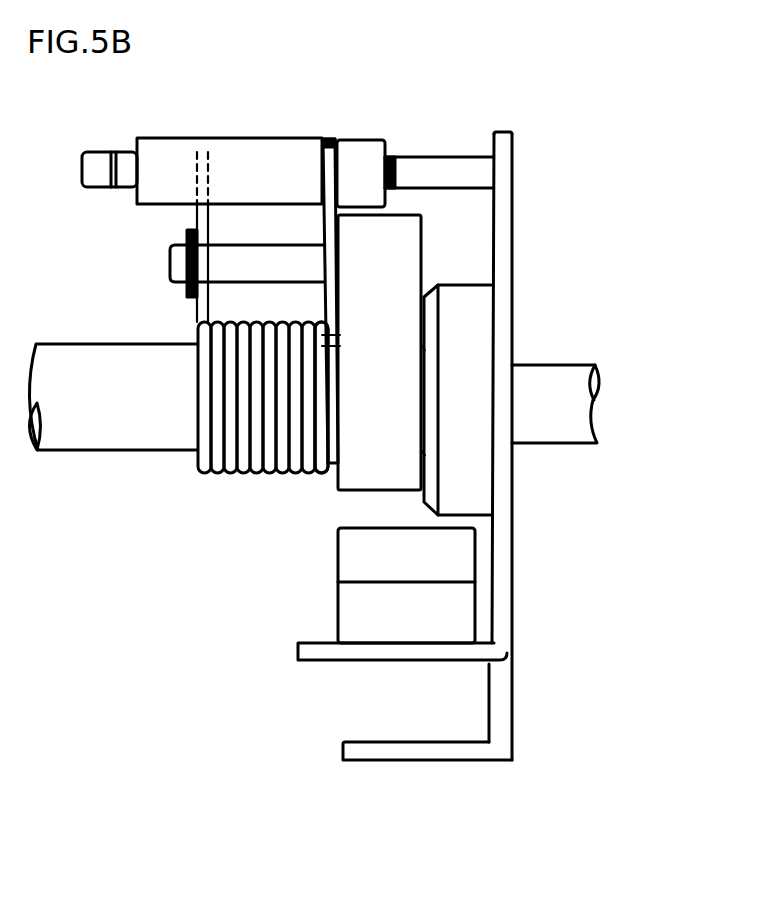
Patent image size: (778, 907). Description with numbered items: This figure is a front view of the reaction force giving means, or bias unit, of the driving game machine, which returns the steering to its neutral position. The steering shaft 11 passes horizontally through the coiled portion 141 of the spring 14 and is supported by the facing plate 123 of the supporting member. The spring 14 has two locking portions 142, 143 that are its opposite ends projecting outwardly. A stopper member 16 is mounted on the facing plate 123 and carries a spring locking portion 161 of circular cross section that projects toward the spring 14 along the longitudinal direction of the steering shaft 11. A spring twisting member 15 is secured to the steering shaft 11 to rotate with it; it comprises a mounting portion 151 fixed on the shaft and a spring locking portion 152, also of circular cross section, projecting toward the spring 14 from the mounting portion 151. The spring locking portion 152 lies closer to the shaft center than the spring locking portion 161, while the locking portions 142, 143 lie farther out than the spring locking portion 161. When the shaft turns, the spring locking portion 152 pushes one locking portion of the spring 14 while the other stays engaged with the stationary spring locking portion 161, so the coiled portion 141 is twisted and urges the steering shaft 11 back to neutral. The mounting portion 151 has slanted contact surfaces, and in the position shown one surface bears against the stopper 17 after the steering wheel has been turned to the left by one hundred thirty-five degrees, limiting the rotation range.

The steering shaft 11 is at (90, 443).
The spring 14 is at (220, 477).
The coiled portion 141 is at (258, 477).
The locking portion 142 is at (198, 217).
The locking portion 143 is at (329, 140).
The spring twisting member 15 is at (436, 270).
The mounting portion 151 is at (417, 232).
The spring locking portion 152 is at (225, 278).
The stopper member 16 is at (483, 175).
The spring locking portion 161 is at (242, 148).
The stopper 17 is at (468, 555).
The facing plate 123 is at (502, 237).